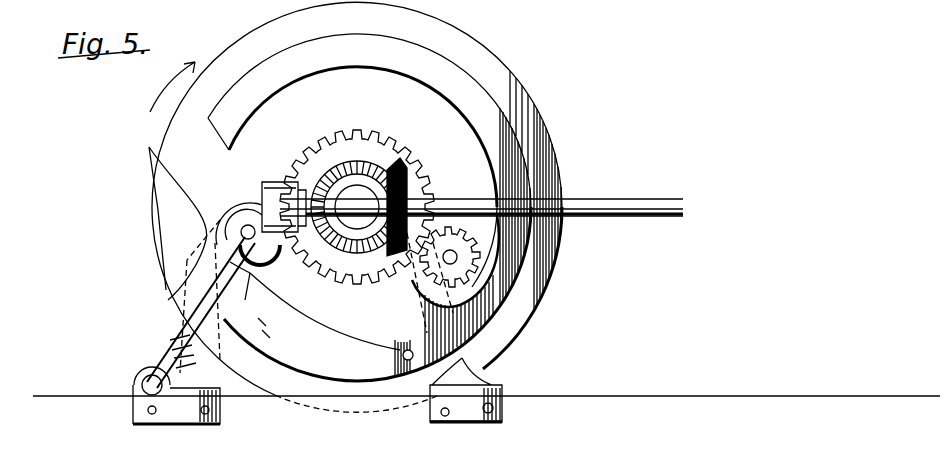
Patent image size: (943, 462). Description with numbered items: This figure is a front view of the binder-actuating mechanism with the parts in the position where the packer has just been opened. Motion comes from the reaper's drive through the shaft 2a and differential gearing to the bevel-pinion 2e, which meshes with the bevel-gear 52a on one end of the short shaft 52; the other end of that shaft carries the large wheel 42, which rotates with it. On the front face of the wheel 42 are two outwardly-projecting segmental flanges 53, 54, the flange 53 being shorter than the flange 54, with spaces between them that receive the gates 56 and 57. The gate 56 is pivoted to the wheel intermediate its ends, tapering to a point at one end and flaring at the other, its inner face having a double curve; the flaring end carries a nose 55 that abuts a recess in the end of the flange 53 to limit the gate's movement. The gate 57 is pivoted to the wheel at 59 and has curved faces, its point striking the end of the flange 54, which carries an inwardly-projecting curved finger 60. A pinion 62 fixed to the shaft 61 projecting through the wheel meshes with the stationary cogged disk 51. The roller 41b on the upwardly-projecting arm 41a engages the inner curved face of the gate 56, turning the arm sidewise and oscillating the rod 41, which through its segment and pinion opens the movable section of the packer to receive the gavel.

The large wheel 42 is at (357, 207).
The segmental flange 54 is at (369, 207).
The gate 56 is at (162, 223).
The cogged disk 51 is at (357, 197).
The bevel-gear 52a is at (360, 190).
The short shaft 52 is at (408, 170).
The bevel-pinion 2e is at (325, 174).
The roller 41b is at (245, 204).
The shaft 2a is at (481, 195).
The pinion 62 is at (450, 257).
The shaft 61 is at (456, 263).
The curved finger or lug 60 is at (418, 298).
The pivot of gate 57 59 is at (408, 350).
The gate 57 is at (446, 336).
The nose 55 is at (254, 305).
The segmental flange 53 is at (315, 315).
The upwardly-projecting arm 41a is at (190, 330).
The oscillating rod 41 is at (142, 386).